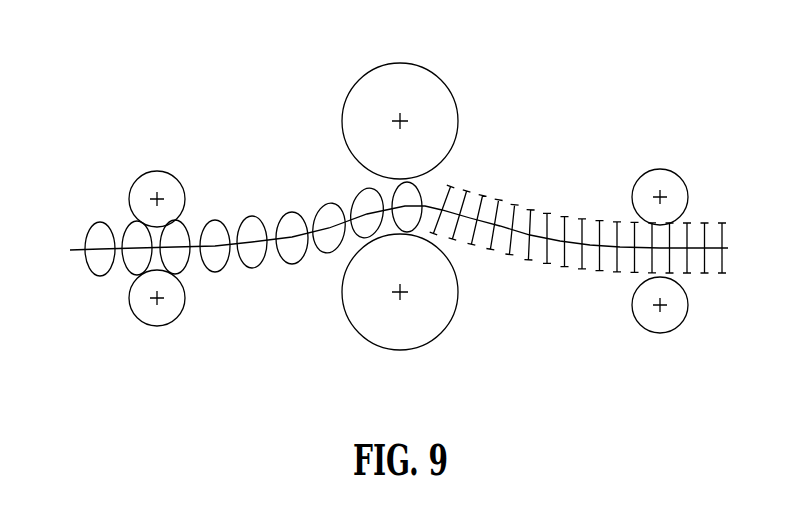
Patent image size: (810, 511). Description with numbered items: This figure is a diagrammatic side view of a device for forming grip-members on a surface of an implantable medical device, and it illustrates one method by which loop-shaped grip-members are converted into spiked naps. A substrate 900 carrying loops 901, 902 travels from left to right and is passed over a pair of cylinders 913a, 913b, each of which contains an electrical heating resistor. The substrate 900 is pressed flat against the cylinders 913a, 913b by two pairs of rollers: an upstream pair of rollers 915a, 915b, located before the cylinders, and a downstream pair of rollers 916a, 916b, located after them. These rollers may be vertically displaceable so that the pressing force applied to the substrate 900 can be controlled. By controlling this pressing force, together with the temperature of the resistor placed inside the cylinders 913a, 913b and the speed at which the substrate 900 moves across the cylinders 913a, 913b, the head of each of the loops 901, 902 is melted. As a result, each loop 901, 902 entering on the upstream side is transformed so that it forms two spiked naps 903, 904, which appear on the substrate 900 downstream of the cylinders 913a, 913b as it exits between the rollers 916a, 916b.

The substrate 900 is at (150, 104).
The loop 901 is at (99, 277).
The loop 902 is at (99, 222).
The spiked nap 903 is at (599, 271).
The spiked nap 904 is at (582, 219).
The cylinder 913a is at (398, 63).
The cylinder 913b is at (398, 351).
The upstream roller 915a is at (157, 170).
The upstream roller 915b is at (157, 327).
The downstream roller 916a is at (660, 169).
The downstream roller 916b is at (660, 333).